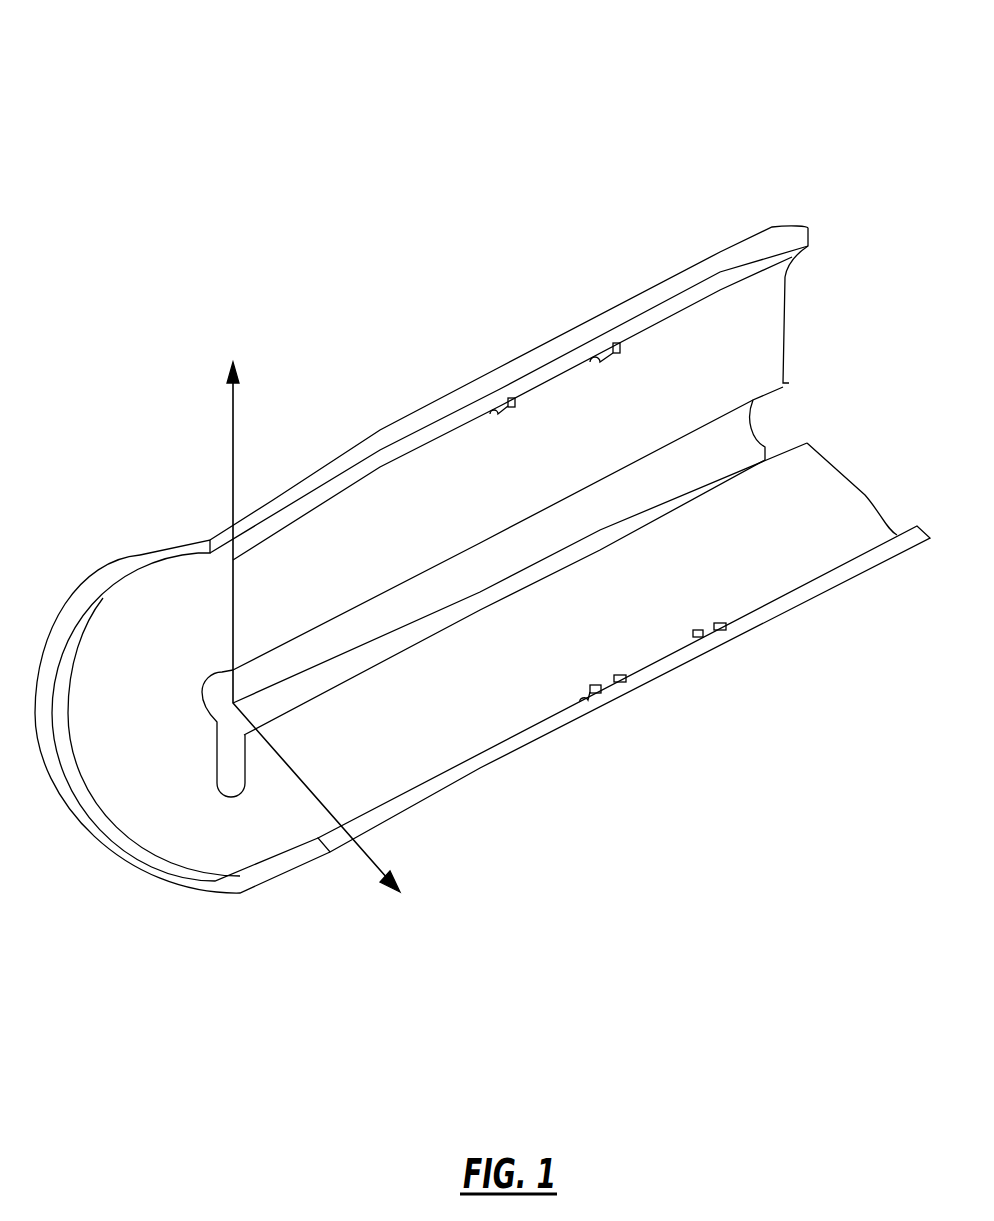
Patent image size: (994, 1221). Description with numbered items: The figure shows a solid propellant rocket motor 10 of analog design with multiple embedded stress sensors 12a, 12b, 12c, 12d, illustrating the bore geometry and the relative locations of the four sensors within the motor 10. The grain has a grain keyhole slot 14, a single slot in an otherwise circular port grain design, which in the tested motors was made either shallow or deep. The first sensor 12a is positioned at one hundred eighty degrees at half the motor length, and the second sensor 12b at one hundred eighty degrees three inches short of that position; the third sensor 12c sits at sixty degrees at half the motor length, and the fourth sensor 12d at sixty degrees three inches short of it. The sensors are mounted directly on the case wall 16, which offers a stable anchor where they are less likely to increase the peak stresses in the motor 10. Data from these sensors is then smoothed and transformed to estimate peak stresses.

The solid propellant rocket motor 10 is at (482, 491).
The first sensor 12a is at (512, 400).
The second sensor 12b is at (617, 347).
The third sensor 12c is at (618, 680).
The fourth sensor 12d is at (703, 637).
The grain keyhole slot 14 is at (232, 765).
The case wall 16 is at (530, 746).